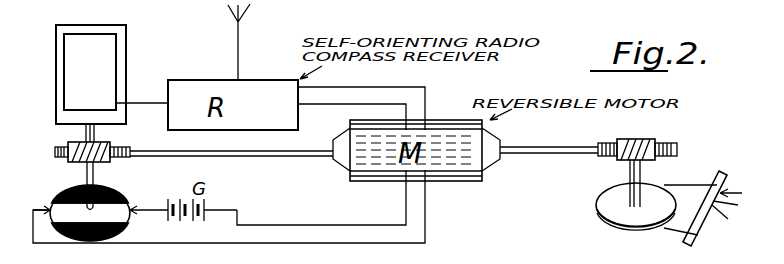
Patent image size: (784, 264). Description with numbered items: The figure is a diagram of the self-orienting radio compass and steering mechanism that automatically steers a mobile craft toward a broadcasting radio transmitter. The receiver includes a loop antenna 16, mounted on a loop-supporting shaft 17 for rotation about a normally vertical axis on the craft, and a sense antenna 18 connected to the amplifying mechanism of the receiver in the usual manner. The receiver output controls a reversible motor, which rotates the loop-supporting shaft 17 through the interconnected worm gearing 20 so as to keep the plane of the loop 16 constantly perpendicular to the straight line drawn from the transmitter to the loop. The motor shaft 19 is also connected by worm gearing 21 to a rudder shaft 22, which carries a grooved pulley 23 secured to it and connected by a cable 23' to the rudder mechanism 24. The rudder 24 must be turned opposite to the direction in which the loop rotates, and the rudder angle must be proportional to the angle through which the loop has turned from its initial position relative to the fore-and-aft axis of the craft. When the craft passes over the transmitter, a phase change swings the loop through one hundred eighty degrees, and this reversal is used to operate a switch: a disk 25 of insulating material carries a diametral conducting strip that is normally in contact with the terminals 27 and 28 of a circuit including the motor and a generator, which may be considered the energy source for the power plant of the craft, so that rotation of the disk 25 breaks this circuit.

The loop antenna 16 is at (110, 66).
The loop-supporting shaft 17 is at (95, 177).
The sense antenna 18 is at (240, 52).
The shaft 19 is at (245, 152).
The worm gearing 20 is at (69, 142).
The worm gearing 21 is at (668, 132).
The rudder shaft 22 is at (630, 170).
The grooved pulley 23 is at (616, 206).
The cable 23' is at (695, 203).
The rudder mechanism 24 is at (738, 202).
The disk 25 is at (128, 232).
The terminal 27 is at (46, 209).
The terminal 28 is at (139, 210).